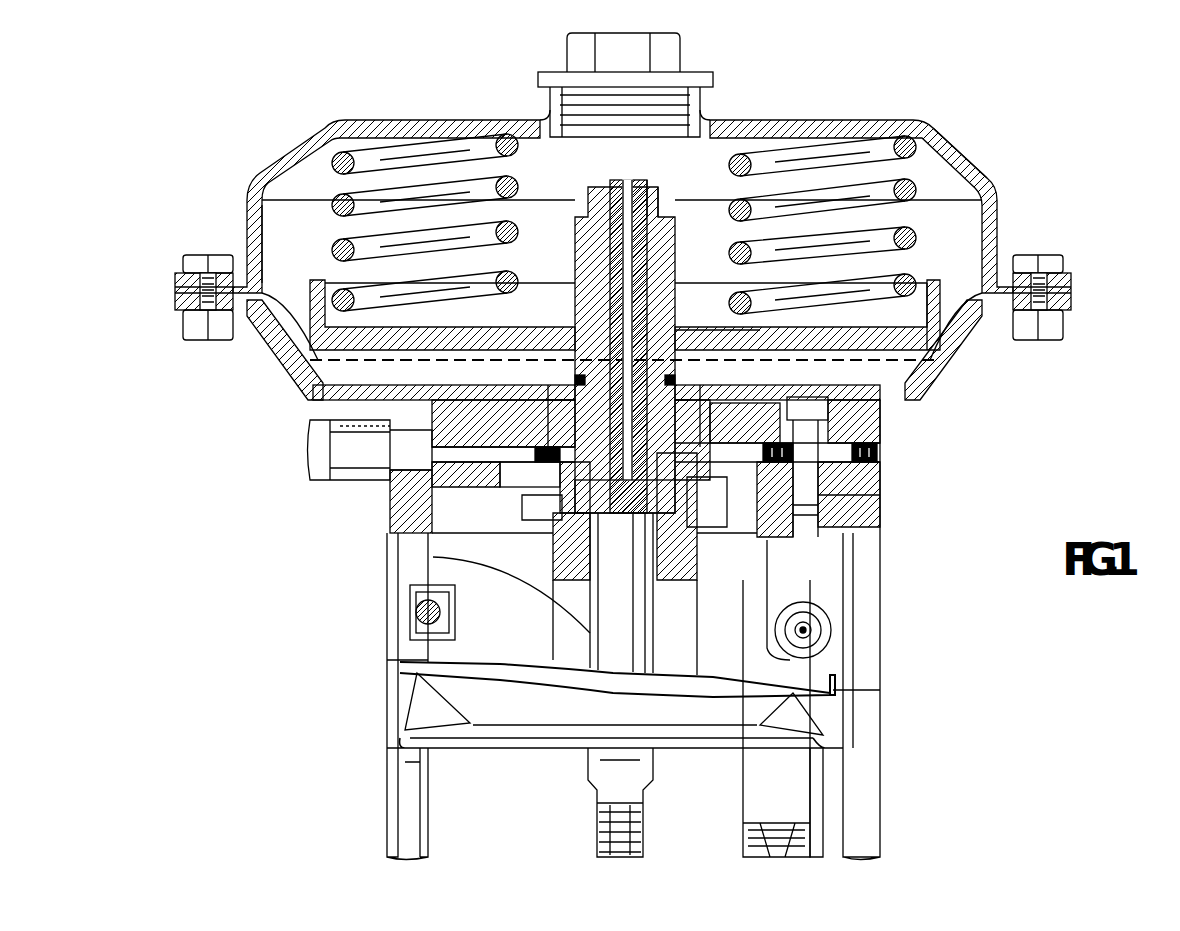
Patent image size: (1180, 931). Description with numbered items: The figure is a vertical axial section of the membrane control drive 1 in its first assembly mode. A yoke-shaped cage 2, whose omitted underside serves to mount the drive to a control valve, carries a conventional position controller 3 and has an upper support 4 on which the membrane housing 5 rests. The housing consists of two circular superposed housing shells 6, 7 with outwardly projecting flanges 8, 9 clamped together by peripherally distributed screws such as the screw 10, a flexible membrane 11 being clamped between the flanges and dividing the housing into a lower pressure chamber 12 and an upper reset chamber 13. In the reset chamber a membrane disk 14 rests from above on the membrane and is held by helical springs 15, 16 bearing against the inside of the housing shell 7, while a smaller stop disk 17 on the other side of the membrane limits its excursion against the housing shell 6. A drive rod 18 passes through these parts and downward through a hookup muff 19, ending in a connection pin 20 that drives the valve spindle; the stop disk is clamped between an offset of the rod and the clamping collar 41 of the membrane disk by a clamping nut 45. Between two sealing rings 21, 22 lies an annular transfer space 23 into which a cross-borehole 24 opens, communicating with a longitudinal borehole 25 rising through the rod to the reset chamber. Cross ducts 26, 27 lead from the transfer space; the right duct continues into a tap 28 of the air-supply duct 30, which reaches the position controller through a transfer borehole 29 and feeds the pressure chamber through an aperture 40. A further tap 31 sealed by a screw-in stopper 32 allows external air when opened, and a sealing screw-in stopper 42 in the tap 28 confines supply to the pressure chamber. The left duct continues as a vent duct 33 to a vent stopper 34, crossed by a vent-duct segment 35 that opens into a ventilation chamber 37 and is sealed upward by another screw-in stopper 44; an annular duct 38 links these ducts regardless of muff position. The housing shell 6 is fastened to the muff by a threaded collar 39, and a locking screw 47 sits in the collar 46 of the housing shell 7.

The membrane control drive 1 is at (285, 608).
The yoke-shaped cage 2 is at (872, 665).
The position controller 3 is at (495, 712).
The upper support 4 is at (477, 270).
The membrane housing 5 is at (905, 118).
The housing shell 6 is at (272, 352).
The housing shell 7 is at (382, 127).
The flange 8 is at (1063, 305).
The flange 9 is at (1071, 287).
The screw 10 is at (192, 340).
The membrane 11 is at (972, 365).
The pressure chamber 12 is at (926, 395).
The reset chamber 13 is at (942, 162).
The membrane disk 14 is at (930, 282).
The helical spring 15 is at (340, 250).
The helical spring 16 is at (782, 155).
The stop disk 17 is at (722, 300).
The drive rod 18 is at (597, 622).
The hookup muff 19 is at (672, 580).
The connection pin 20 is at (600, 822).
The sealing ring 21 is at (688, 358).
The sealing ring 22 is at (560, 560).
The annular transfer space 23 is at (548, 520).
The cross-borehole 24 is at (695, 572).
The longitudinal borehole 25 is at (660, 225).
The cross duct 26 is at (530, 350).
The cross duct 27 is at (700, 520).
The tap 28 is at (750, 522).
The transfer borehole 29 is at (840, 633).
The air-supply duct 30 is at (858, 527).
The tap 31 is at (882, 490).
The screw-in stopper 32 is at (880, 452).
The vent duct 33 is at (392, 515).
The vent stopper 34 is at (315, 472).
The vent-duct segment 35 is at (390, 482).
The ventilation chamber 37 is at (727, 650).
The annular duct 38 is at (492, 487).
The collar 39 is at (322, 393).
The aperture 40 is at (882, 428).
The clamping collar 41 is at (590, 240).
The sealing screw-in stopper 42 is at (855, 505).
The screw-in stopper 44 is at (312, 450).
The clamping nut 45 is at (635, 255).
The collar 46 is at (548, 100).
The locking screw 47 is at (680, 52).